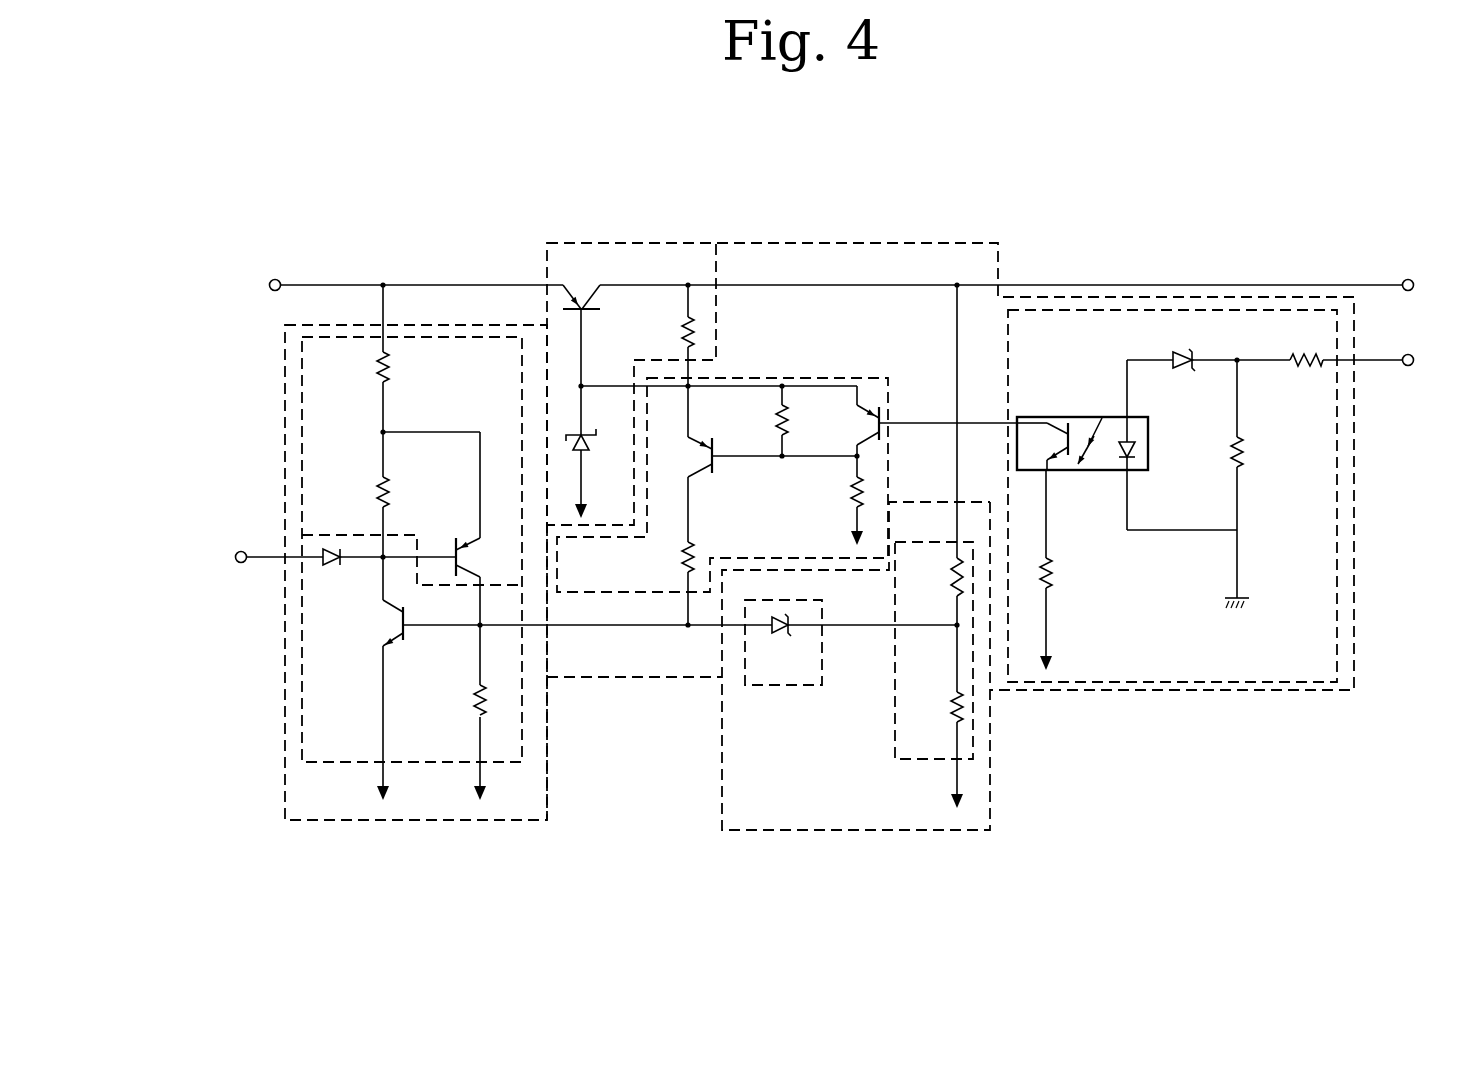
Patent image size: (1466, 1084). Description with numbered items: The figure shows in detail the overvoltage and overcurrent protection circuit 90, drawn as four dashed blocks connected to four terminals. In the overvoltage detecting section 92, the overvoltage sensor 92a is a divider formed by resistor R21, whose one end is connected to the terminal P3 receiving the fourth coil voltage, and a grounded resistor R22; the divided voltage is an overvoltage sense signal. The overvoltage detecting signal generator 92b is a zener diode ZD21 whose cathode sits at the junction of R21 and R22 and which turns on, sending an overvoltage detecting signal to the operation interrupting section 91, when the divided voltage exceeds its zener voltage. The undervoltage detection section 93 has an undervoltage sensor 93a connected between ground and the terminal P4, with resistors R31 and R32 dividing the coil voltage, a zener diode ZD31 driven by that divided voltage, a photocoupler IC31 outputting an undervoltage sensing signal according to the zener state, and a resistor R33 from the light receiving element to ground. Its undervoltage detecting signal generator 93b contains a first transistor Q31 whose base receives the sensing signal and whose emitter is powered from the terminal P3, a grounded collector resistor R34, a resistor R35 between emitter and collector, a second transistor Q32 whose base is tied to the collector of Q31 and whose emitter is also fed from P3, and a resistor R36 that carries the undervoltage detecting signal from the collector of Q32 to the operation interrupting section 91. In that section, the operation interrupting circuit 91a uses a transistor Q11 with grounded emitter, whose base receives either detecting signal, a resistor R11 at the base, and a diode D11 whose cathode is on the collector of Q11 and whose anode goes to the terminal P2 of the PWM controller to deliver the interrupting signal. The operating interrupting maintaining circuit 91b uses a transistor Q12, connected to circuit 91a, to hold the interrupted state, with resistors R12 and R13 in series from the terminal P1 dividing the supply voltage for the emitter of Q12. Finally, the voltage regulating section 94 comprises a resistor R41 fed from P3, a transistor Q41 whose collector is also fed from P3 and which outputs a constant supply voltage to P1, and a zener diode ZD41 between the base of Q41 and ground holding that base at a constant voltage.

The overvoltage and overcurrent protection circuit 90 is at (1188, 167).
The operation interrupting section 91 is at (345, 820).
The operation interrupting circuit 91a is at (302, 719).
The operating interrupting maintaining circuit 91b is at (408, 337).
The overvoltage detecting section 92 is at (845, 830).
The overvoltage sensor 92a is at (973, 757).
The overvoltage detecting signal generator 92b is at (781, 685).
The undervoltage detection section 93 is at (1188, 690).
The undervoltage sensor 93a is at (1337, 682).
The undervoltage detecting signal generator 93b is at (828, 378).
The voltage regulating section 94 is at (570, 242).
The terminal P1 is at (254, 285).
The terminal P2 is at (223, 557).
The terminal P3 is at (1430, 286).
The terminal P4 is at (1430, 361).
The resistor R11 is at (458, 704).
The resistor R12 is at (359, 368).
The resistor R13 is at (359, 494).
The diode D11 is at (338, 573).
The transistor Q11 is at (376, 623).
The transistor Q12 is at (487, 557).
The transistor Q41 is at (589, 286).
The resistor R41 is at (664, 332).
The zener diode ZD41 is at (609, 456).
The second transistor Q32 is at (683, 457).
The resistor R35 is at (757, 420).
The first transistor Q31 is at (850, 425).
The resistor R34 is at (831, 492).
The resistor R36 is at (663, 557).
The zener diode ZD21 is at (790, 645).
The resistor R21 is at (932, 578).
The resistor R22 is at (932, 707).
The photocoupler IC31 is at (1082, 429).
The resistor R33 is at (1073, 575).
The zener diode ZD31 is at (1190, 344).
The resistor R31 is at (1311, 348).
The resistor R32 is at (1211, 453).